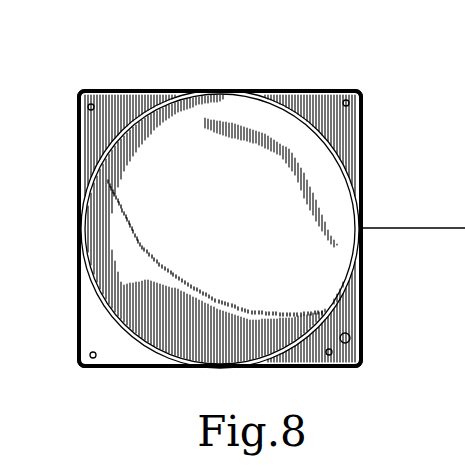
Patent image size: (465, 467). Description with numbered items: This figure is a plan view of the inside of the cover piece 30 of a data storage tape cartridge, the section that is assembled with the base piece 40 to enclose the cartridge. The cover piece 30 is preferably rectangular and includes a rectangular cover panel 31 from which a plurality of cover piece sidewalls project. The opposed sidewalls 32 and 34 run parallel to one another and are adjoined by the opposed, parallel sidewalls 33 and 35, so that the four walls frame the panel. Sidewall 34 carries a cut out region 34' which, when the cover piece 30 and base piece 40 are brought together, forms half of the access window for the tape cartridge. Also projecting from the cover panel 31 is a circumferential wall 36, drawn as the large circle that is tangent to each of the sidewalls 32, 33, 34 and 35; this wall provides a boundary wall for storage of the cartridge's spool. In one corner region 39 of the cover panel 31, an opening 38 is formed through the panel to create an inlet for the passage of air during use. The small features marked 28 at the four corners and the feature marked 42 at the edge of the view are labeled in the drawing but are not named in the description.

The mounting holes 28 is at (91, 103).
The cover piece 30 is at (101, 382).
The cover panel 31 is at (211, 213).
The cover piece sidewall 32 is at (127, 90).
The cover piece sidewall 33 is at (77, 288).
The cover piece sidewall 34 is at (301, 397).
The cut out region 34' is at (152, 390).
The cover piece sidewall 35 is at (363, 282).
The circumferential wall 36 is at (300, 121).
The opening 38 is at (351, 338).
The corner region 39 is at (352, 322).
The base piece 40 is at (413, 211).
The reference numeral 42 is at (461, 270).